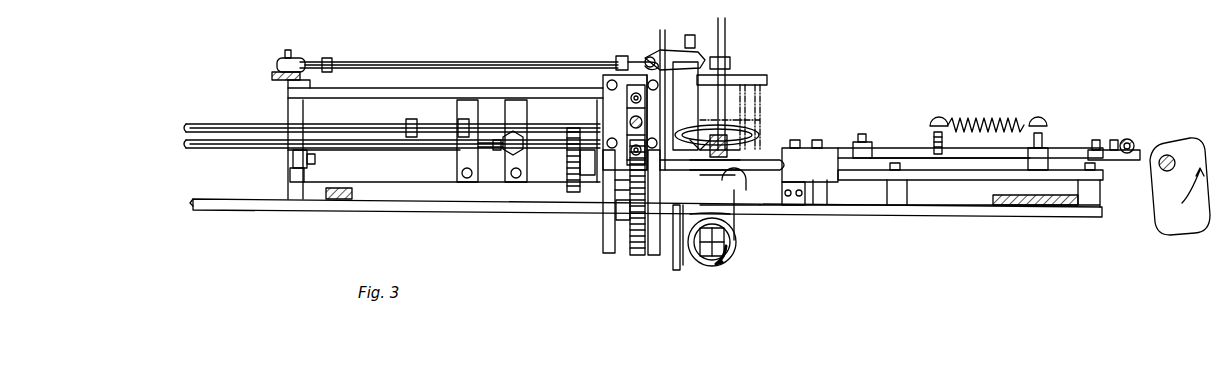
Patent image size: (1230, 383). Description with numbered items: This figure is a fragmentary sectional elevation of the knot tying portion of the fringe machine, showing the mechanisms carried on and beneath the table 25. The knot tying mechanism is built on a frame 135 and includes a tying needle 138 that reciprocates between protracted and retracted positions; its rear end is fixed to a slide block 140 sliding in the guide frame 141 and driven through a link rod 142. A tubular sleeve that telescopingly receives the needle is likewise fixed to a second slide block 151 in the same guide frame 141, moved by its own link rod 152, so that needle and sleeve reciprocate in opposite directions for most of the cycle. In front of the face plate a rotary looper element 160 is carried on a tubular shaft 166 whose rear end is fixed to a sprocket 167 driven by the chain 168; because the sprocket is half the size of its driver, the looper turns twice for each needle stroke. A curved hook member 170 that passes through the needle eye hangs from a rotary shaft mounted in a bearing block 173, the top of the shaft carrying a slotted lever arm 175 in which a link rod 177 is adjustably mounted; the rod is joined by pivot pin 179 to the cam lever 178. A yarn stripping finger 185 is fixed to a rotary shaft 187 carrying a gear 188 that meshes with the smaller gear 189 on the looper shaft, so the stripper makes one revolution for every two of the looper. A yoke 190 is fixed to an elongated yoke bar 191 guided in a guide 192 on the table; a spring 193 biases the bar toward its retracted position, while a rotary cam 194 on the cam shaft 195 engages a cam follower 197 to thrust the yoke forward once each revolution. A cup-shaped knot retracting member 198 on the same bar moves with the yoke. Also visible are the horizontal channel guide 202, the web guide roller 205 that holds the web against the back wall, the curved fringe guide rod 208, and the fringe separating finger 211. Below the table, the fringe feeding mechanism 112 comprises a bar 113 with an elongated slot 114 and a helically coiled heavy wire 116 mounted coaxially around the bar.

The table 25 is at (990, 210).
The fringe feeding mechanism 112 is at (726, 286).
The bar 113 is at (722, 256).
The elongated slot 114 is at (716, 266).
The helically coiled heavy wire 116 is at (736, 248).
The frame 135 is at (603, 80).
The tying needle 138 is at (300, 172).
The slide block 140 is at (460, 180).
The guide frame 141 is at (425, 92).
The link rod 142 is at (240, 122).
The slide block 151 is at (512, 180).
The link rod 152 is at (243, 148).
The looper element 160 is at (705, 150).
The tubular shaft 166 is at (600, 148).
The sprocket 167 is at (567, 148).
The chain 168 is at (568, 128).
The hook member 170 is at (740, 130).
The bearing block 173 is at (690, 100).
The slotted lever arm 175 is at (676, 46).
The link rod 177 is at (410, 62).
The cam lever 178 is at (272, 79).
The pivot pin 179 is at (284, 56).
The yarn stripping finger 185 is at (692, 270).
The rotary shaft 187 is at (664, 255).
The gear 188 is at (630, 252).
The gear 189 is at (640, 185).
The yoke 190 is at (736, 193).
The yoke bar 191 is at (920, 160).
The guide 192 is at (870, 155).
The spring 193 is at (1006, 112).
The rotary cam 194 is at (1196, 221).
The cam shaft 195 is at (1188, 132).
The cam follower 197 is at (1138, 122).
The knot retracting member 198 is at (775, 200).
The channel guide 202 is at (705, 177).
The web guide roller 205 is at (720, 143).
The fringe guide rod 208 is at (675, 270).
The fringe separating finger 211 is at (735, 222).